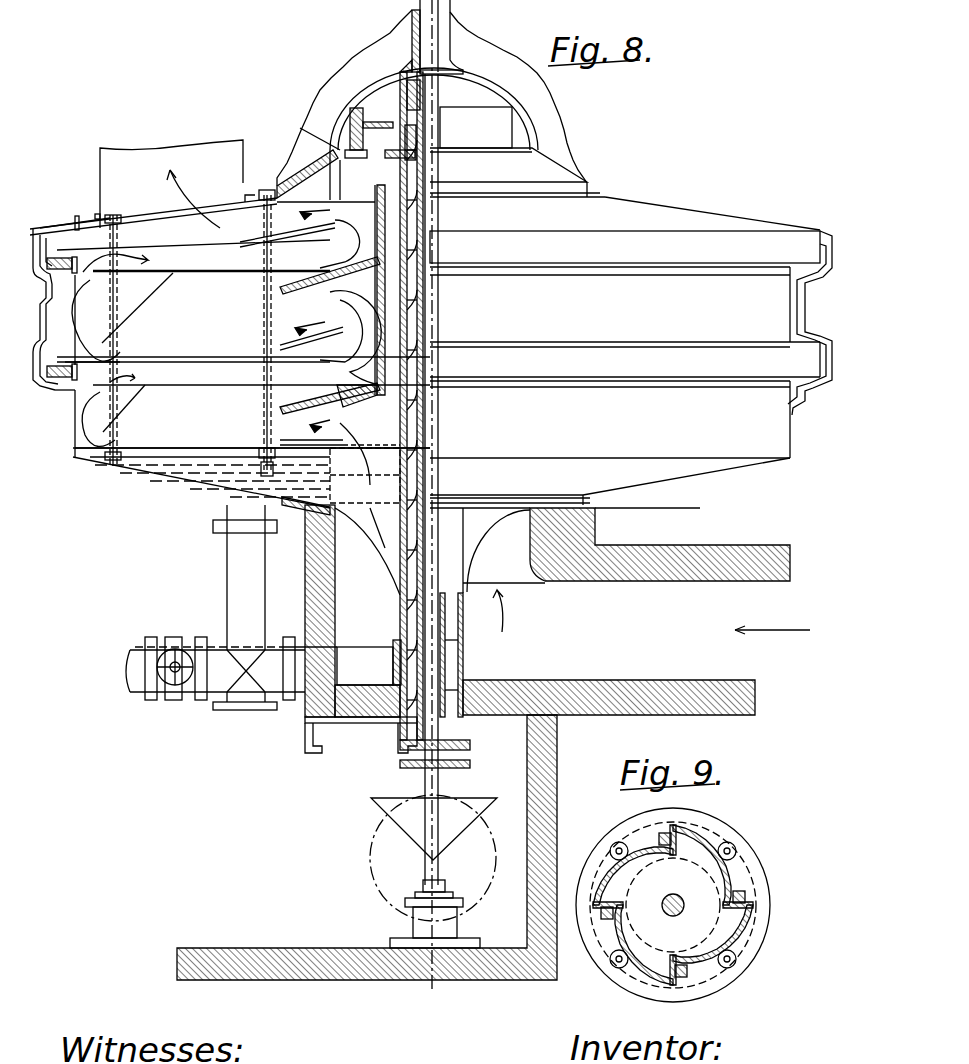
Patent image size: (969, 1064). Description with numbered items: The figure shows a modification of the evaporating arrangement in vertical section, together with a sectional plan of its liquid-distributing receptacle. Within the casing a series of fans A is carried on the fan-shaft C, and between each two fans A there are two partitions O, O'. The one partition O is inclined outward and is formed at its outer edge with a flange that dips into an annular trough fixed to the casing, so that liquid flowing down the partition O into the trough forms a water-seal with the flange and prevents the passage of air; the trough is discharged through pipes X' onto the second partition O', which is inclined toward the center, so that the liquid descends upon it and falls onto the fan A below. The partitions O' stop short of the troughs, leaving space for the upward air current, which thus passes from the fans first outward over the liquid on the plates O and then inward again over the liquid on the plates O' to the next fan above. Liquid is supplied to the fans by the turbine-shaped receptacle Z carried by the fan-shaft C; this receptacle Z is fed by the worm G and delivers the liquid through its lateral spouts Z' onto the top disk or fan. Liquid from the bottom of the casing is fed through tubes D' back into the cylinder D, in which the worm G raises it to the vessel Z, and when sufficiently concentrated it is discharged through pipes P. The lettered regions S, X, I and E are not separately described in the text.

In FIG. 8, the feed chute S is at (171, 184).
In FIG. 8, the fan A is at (320, 344).
In FIG. 8, the outer casing X is at (54, 343).
In FIG. 8, the pipe X' is at (201, 350).
In FIG. 8, the partition O is at (243, 302).
In FIG. 8, the second partition O' is at (252, 416).
In FIG. 8, the fan-shaft C is at (437, 495).
In FIG. 8, the cylinder D is at (421, 406).
In FIG. 8, the tube D' is at (365, 475).
In FIG. 8, the worm G is at (367, 551).
In FIG. 8, the main body / hopper I is at (125, 497).
In FIG. 8, the pipe P is at (244, 607).
In FIG. 8, the channel E is at (636, 611).
In FIG. 8, the turbine-shaped receptacle Z is at (369, 130).
In FIG. 9, the turbine-shaped receptacle Z is at (673, 905).
In FIG. 9, the lateral spout Z' is at (672, 905).